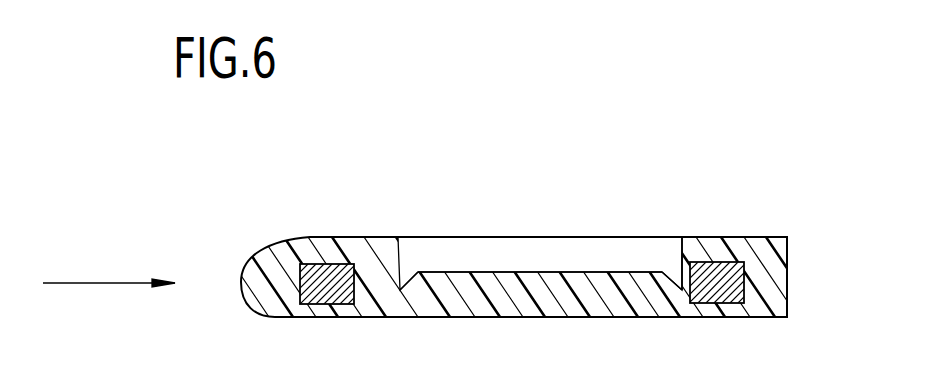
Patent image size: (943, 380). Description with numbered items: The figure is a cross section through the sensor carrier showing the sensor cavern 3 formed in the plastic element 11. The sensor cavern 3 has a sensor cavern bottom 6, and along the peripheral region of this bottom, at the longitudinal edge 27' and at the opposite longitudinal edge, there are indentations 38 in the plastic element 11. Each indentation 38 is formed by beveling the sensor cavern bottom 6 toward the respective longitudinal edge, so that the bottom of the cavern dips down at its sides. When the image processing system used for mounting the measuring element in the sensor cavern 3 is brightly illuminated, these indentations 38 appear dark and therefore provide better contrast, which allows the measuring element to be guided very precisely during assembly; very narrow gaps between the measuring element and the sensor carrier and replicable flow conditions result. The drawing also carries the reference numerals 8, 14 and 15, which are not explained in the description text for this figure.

The sensor cavern 3 is at (527, 270).
The sensor cavern bottom 6 is at (584, 270).
The heating element 8 is at (325, 278).
The plastic element 11 is at (778, 278).
The cover wall 14 is at (375, 237).
The flow direction arrow 15 is at (75, 283).
The longitudinal edge 27' is at (673, 216).
The indentation 38 is at (401, 288).